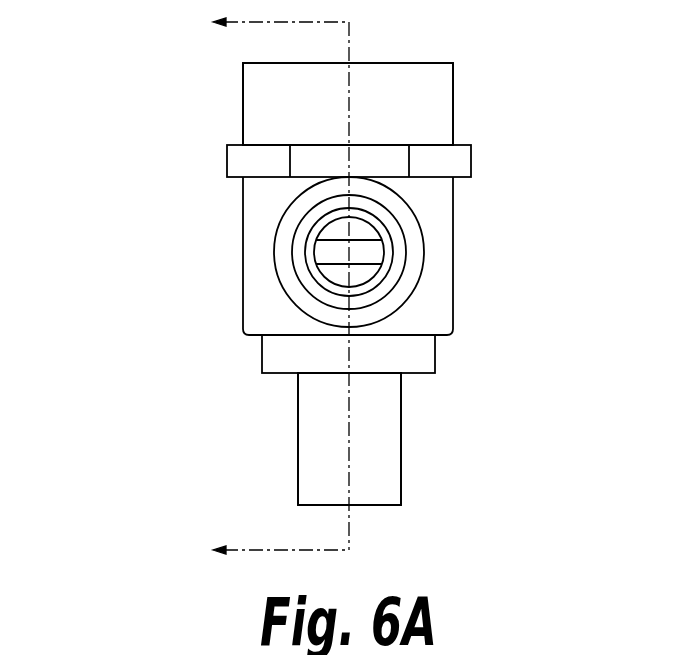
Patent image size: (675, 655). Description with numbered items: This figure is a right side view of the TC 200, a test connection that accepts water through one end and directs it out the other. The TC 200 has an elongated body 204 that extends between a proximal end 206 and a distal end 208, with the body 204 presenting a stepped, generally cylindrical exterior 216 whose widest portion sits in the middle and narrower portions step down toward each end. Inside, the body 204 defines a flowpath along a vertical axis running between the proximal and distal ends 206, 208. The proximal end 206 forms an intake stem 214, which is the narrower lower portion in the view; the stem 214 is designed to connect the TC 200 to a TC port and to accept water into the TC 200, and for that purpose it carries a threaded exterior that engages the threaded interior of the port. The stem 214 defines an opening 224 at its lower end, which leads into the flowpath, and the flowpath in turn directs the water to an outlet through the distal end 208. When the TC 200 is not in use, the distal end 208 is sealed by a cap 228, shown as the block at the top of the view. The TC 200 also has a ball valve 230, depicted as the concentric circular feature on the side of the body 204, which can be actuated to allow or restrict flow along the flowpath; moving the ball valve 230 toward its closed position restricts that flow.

The TC 200 is at (317, 286).
The elongated body 204 is at (437, 252).
The proximal end 206 is at (412, 452).
The distal end 208 is at (411, 113).
The intake stem 214 is at (372, 403).
The stepped, generally cylindrical exterior 216 is at (455, 307).
The opening 224 is at (369, 519).
The cap 228 is at (418, 92).
The ball valve 230 is at (315, 250).